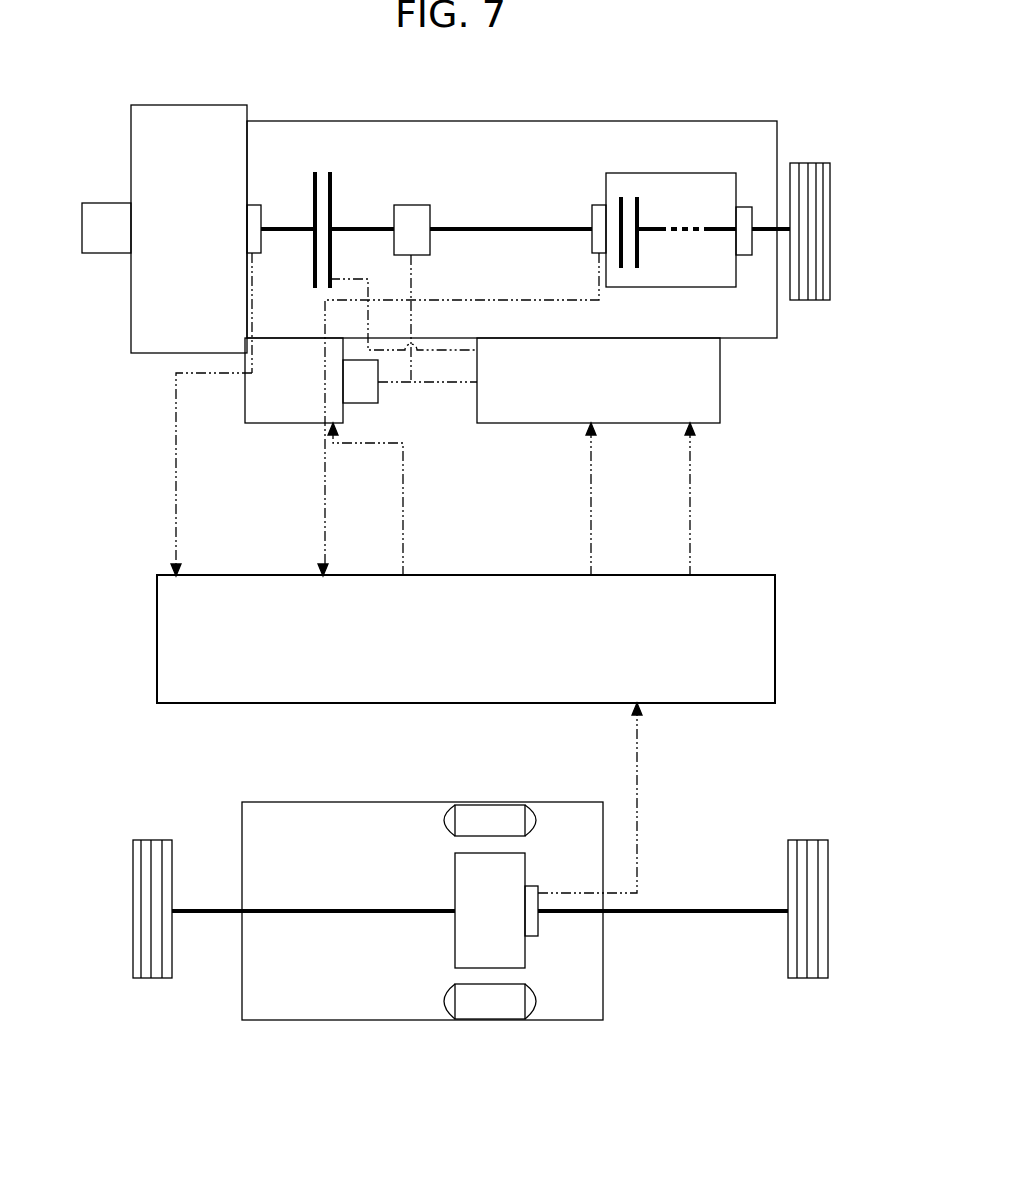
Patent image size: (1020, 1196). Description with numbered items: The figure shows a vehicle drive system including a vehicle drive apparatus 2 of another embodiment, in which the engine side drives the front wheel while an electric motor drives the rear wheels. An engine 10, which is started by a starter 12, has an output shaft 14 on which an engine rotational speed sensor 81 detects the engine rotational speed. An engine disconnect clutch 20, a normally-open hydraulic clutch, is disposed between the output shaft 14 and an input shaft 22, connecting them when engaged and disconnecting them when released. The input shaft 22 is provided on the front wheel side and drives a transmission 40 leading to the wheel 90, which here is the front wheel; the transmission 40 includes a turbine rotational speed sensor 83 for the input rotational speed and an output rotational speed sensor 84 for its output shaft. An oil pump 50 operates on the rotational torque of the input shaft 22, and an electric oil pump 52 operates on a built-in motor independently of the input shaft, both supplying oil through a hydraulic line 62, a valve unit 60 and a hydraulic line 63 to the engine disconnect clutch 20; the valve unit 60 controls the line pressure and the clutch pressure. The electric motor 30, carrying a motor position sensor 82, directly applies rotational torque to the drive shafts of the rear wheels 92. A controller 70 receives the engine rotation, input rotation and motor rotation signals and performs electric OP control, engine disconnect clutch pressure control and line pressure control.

The vehicle drive apparatus 2 is at (82, 439).
The engine 10 is at (131, 328).
The starter 12 is at (112, 253).
The output shaft 14 is at (287, 232).
The engine disconnect clutch 20 is at (331, 152).
The input shaft 22 is at (372, 232).
The electric motor 30 is at (548, 831).
The transmission 40 is at (703, 154).
The oil pump 50 is at (398, 205).
The electric oil pump 52 is at (242, 402).
The valve unit 60 is at (720, 388).
The hydraulic line 62 is at (433, 384).
The hydraulic line 63 is at (424, 351).
The controller 70 is at (726, 575).
The engine rotational speed sensor 81 is at (252, 205).
The motor position sensor 82 is at (531, 936).
The turbine rotational speed sensor 83 is at (596, 205).
The output rotational speed sensor 84 is at (744, 255).
The wheel 90 is at (806, 300).
The rear wheels 92 is at (155, 978).